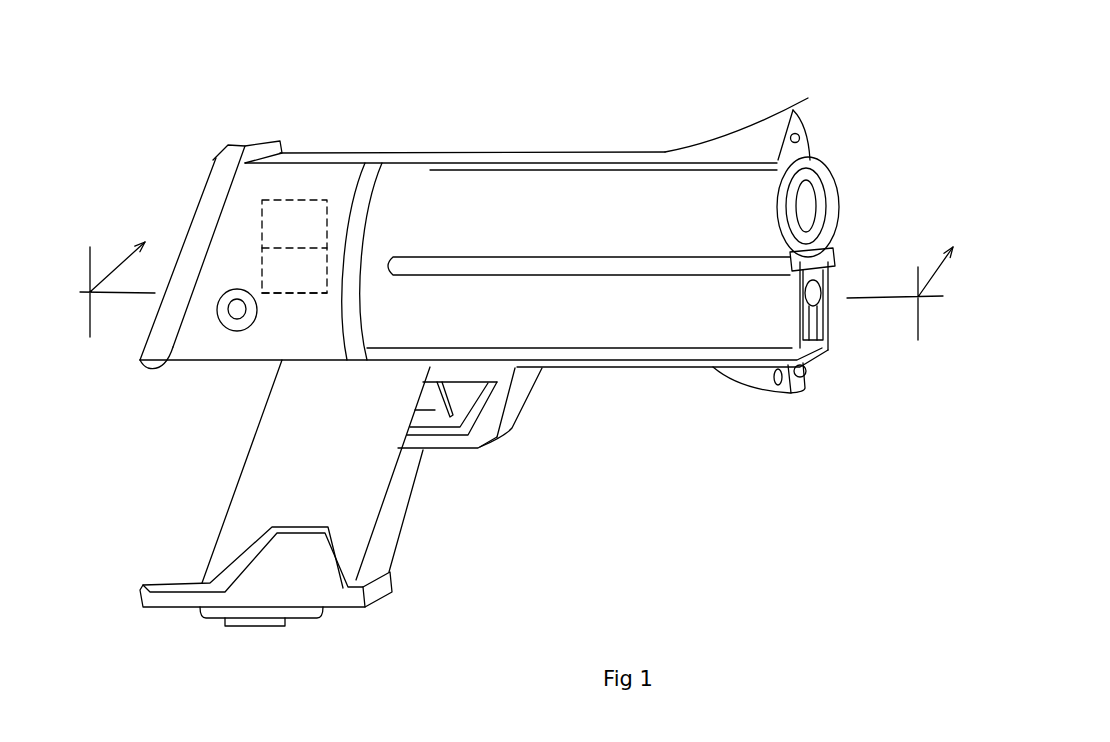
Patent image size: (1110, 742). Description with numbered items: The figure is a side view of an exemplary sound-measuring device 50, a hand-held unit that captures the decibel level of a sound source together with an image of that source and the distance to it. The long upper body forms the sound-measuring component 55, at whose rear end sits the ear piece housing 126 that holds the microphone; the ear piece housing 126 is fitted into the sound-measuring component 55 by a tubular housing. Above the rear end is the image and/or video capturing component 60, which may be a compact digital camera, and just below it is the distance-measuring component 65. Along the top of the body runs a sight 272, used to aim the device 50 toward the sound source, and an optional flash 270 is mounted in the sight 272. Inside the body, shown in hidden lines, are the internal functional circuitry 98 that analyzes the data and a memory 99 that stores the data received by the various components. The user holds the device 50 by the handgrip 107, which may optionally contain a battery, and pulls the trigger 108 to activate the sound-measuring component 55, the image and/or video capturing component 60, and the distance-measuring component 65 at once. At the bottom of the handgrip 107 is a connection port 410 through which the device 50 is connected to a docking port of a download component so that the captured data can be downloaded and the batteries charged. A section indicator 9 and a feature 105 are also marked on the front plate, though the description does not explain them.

The sound-measuring device 50 is at (477, 128).
The sound-measuring component 55 is at (743, 307).
The image and/or video capturing component 60 is at (752, 215).
The distance-measuring component 65 is at (808, 377).
The section axis indicator 9 is at (117, 281).
The internal functional circuitry 98 is at (287, 198).
The memory 99 is at (277, 298).
The button / aperture 105 is at (236, 306).
The handgrip 107 is at (348, 483).
The trigger 108 is at (418, 414).
The ear piece housing 126 is at (826, 290).
The flash 270 is at (788, 117).
The sight 272 is at (758, 120).
The connection port 410 is at (260, 612).